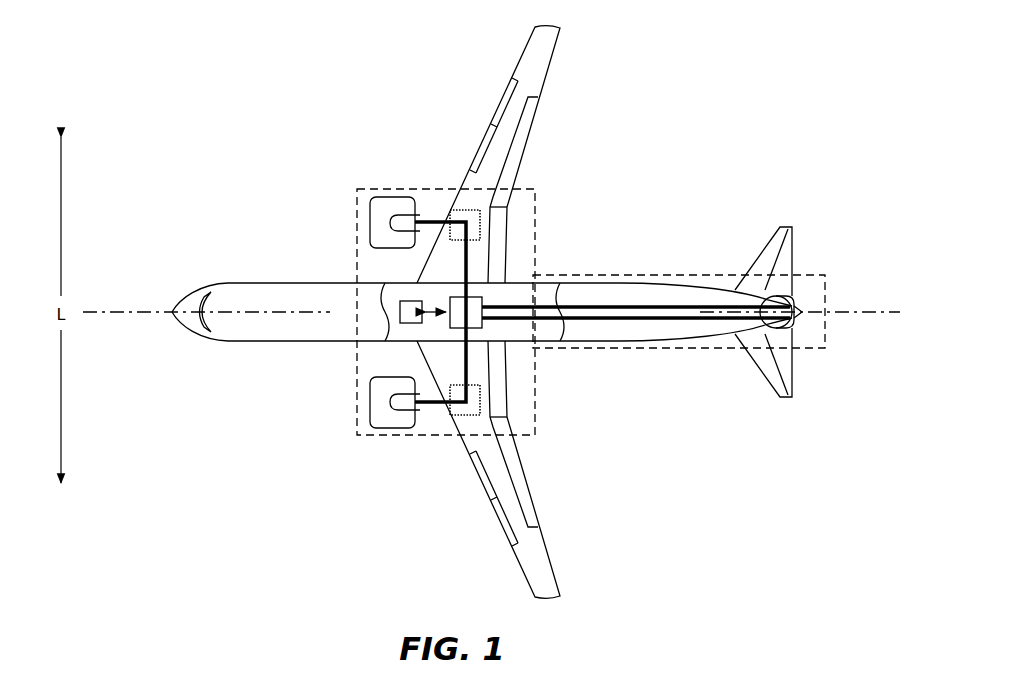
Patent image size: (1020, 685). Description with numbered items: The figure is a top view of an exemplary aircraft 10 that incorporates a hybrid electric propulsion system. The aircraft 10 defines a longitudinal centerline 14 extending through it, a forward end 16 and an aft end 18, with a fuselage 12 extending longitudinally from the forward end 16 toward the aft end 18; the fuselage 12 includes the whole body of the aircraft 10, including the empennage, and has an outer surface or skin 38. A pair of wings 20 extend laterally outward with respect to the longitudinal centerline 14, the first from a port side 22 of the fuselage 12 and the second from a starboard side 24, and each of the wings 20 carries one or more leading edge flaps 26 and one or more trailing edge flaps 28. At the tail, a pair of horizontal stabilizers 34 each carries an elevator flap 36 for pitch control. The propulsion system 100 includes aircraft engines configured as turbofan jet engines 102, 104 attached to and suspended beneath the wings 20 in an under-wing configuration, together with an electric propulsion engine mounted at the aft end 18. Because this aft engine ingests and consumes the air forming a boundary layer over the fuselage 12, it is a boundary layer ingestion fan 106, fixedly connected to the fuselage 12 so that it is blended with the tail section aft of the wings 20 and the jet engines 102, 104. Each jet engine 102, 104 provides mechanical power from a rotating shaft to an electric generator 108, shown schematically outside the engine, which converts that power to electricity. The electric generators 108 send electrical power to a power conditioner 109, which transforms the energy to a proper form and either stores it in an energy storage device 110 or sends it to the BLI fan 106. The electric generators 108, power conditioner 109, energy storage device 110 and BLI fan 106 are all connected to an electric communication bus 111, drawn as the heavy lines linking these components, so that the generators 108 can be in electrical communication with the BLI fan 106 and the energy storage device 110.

The aircraft 10 is at (667, 114).
The fuselage 12 is at (222, 330).
The longitudinal centerline 14 is at (104, 312).
The forward end 16 is at (172, 328).
The aft end 18 is at (755, 392).
The wings 20 is at (543, 48).
The port side 22 is at (290, 357).
The starboard side 24 is at (296, 280).
The leading edge flaps 26 is at (477, 481).
The trailing edge flaps 28 is at (527, 482).
The horizontal stabilizers 34 is at (773, 247).
The elevator flap 36 is at (787, 247).
The outer surface or skin 38 is at (623, 332).
The propulsion system 100 is at (590, 275).
The turbofan jet engine 102 is at (378, 420).
The turbofan jet engine 104 is at (384, 212).
The boundary layer ingestion fan 106 is at (794, 290).
The electric generators 108 is at (480, 225).
The power conditioner 109 is at (485, 305).
The energy storage device 110 is at (405, 325).
The electric communication bus 111 is at (521, 330).